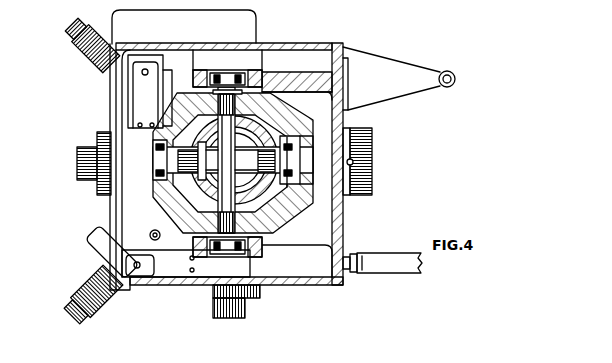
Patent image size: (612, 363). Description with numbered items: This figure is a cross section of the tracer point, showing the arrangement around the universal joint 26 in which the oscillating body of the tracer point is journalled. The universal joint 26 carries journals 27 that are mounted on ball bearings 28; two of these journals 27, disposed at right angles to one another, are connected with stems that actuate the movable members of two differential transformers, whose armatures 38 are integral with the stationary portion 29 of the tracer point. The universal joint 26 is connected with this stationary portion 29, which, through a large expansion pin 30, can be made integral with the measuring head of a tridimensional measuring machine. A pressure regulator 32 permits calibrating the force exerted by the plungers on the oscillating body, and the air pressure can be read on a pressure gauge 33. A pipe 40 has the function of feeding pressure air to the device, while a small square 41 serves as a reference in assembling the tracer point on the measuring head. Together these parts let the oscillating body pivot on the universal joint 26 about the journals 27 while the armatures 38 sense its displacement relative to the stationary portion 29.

The universal joint 26 is at (266, 197).
The journals 27 is at (231, 72).
The ball bearings 28 is at (222, 70).
The stationary portion 29 is at (343, 58).
The expansion pin 30 is at (366, 172).
The pressure regulator 32 is at (88, 285).
The pressure gauge 33 is at (100, 40).
The armatures 38 is at (134, 78).
The pipe 40 is at (398, 268).
The small square 41 is at (405, 64).